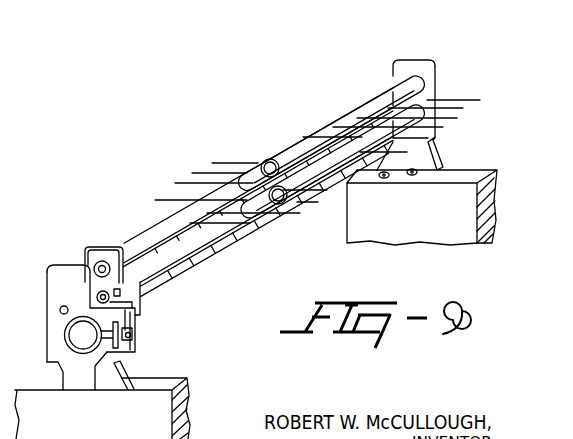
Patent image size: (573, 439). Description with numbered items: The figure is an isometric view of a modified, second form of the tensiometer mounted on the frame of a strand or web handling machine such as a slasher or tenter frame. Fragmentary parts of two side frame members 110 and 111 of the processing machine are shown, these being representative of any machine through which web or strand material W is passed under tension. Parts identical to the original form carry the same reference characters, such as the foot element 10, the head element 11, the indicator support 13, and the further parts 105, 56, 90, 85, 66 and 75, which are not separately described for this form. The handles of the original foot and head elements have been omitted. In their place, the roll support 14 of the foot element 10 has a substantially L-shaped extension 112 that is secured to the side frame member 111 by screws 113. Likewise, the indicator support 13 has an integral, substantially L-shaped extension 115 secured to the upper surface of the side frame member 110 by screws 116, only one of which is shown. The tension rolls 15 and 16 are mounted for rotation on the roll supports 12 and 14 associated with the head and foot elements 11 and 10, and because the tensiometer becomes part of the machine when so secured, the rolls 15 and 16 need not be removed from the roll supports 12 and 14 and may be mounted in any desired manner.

The foot element 10 is at (437, 64).
The roll support 14 is at (432, 90).
The extension 112 is at (440, 153).
The screws 113 is at (408, 178).
The side frame member 111 is at (420, 237).
The slide channel 105 is at (80, 246).
The tension roll 15 is at (244, 172).
The tension roll 16 is at (268, 207).
The web or strand material W is at (455, 110).
The roll support 12 is at (92, 246).
The head element 11 is at (47, 281).
The indicator support 13 is at (47, 331).
The hole 56 is at (59, 308).
The ring 90 is at (64, 345).
The ring bore 85 is at (83, 345).
The roller 66 is at (140, 298).
The clamp 75 is at (137, 328).
The extension 115 is at (82, 384).
The screws 116 is at (133, 375).
The side frame member 110 is at (193, 408).